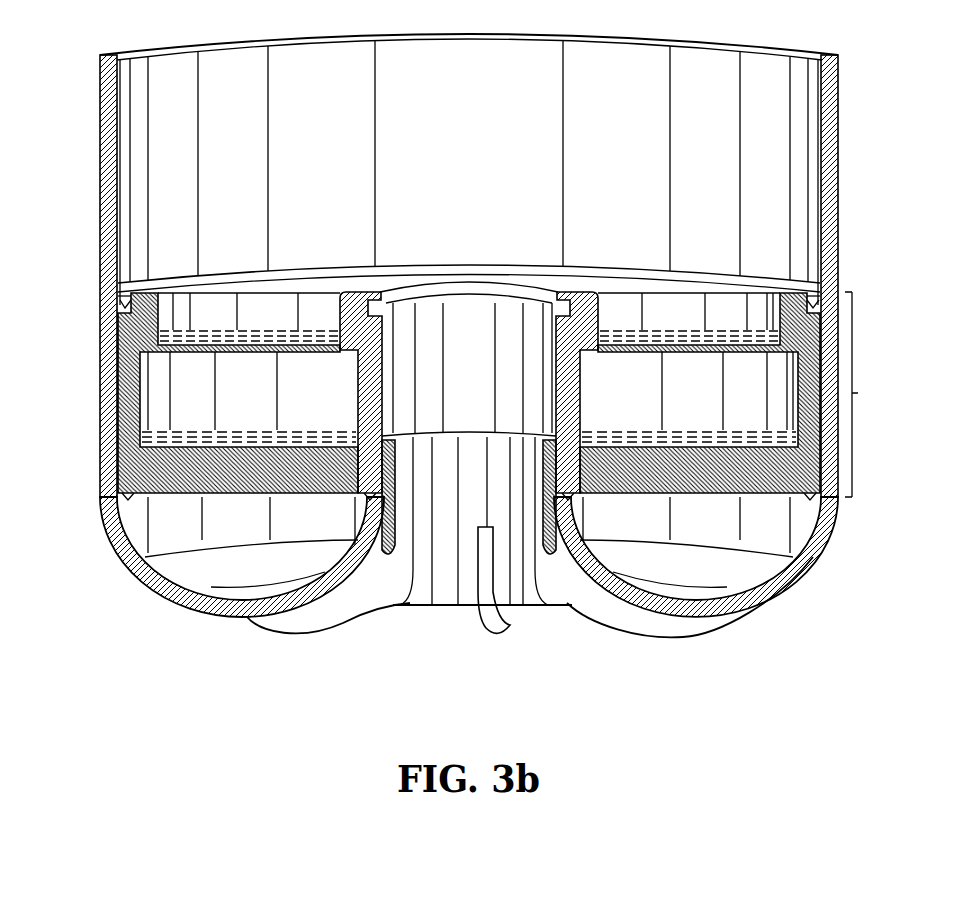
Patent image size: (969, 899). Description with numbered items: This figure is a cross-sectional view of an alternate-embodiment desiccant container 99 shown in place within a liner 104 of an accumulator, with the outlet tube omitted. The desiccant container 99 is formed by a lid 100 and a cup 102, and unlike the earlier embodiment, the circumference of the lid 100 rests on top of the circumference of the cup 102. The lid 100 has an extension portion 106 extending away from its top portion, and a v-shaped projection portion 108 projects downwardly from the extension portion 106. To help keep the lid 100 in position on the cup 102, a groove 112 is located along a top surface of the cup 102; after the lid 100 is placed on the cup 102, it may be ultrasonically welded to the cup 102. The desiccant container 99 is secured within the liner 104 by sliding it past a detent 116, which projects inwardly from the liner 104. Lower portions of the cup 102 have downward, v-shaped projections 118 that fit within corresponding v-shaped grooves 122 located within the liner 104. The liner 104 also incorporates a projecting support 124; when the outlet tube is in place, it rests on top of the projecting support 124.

The desiccant container 99 is at (866, 394).
The lid 100 is at (213, 297).
The cup 102 is at (218, 475).
The liner 104 is at (813, 523).
The extension portion 106 is at (803, 297).
The v-shaped projection portion 108 is at (130, 315).
The groove 112 is at (128, 315).
The detent 116 is at (822, 295).
The v-shaped projections 118 is at (130, 497).
The v-shaped grooves 122 is at (122, 497).
The projecting support 124 is at (548, 472).